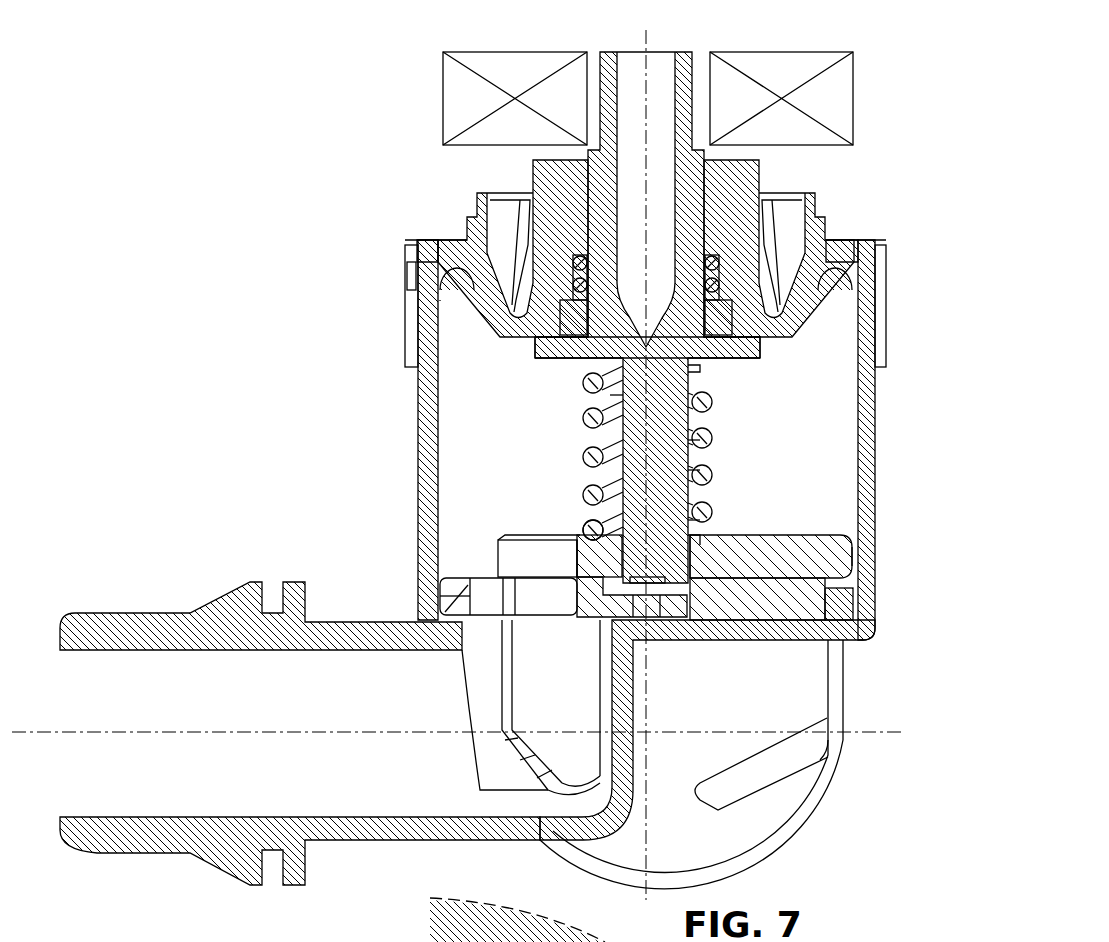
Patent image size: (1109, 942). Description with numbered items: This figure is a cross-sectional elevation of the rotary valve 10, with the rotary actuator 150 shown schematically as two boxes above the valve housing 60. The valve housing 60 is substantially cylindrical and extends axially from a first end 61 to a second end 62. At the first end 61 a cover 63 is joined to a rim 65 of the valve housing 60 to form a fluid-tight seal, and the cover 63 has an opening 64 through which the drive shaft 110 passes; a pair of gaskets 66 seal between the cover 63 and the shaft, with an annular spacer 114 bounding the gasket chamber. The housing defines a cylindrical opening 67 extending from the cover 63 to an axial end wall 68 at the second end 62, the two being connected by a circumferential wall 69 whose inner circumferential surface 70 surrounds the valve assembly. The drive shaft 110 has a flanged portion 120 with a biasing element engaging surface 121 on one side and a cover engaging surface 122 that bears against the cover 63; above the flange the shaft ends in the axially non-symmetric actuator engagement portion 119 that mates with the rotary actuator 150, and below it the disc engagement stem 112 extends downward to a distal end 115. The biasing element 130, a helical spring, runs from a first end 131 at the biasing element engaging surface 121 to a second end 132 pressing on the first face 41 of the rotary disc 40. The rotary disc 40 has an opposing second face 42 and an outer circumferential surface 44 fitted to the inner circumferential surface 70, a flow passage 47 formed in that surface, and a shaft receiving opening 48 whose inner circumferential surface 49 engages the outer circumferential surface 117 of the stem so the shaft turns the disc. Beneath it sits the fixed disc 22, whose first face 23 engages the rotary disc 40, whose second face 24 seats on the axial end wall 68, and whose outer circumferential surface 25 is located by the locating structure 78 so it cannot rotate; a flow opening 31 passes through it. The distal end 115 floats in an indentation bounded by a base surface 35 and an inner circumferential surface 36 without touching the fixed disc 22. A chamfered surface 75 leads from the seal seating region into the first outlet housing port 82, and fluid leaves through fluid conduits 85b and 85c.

The rotary valve 10 is at (474, 475).
The fixed disc 22 is at (474, 578).
The first face 23 is at (800, 540).
The second face 24 is at (785, 622).
The outer circumferential surface 25 is at (440, 592).
The flow opening 31 is at (577, 600).
The base surface 35 is at (610, 555).
The inner circumferential surface 36 is at (690, 625).
The rotary disc 40 is at (500, 538).
The first face 41 is at (795, 540).
The second face 42 is at (738, 612).
The outer circumferential surface 44 is at (858, 560).
The flow passage 47 is at (560, 555).
The shaft receiving opening 48 is at (598, 530).
The inner circumferential surface 49 is at (593, 530).
The valve housing 60 is at (616, 472).
The first end 61 is at (411, 276).
The second end 62 is at (866, 640).
The cover 63 is at (448, 255).
The opening 64 is at (575, 305).
The rim 65 is at (420, 245).
The gaskets 66 is at (745, 240).
The opening 67 is at (834, 371).
The axial end wall 68 is at (702, 625).
The circumferential wall 69 is at (418, 510).
The inner circumferential surface 70 is at (438, 472).
The chamfered surface 75 is at (462, 620).
The locating structure 78 is at (842, 600).
The first outlet housing port 82 is at (608, 625).
The fluid conduit 85b is at (150, 620).
The fluid conduit 85c is at (760, 815).
The drive shaft 110 is at (702, 380).
The disc engagement stem 112 is at (704, 458).
The annular spacer 114 is at (575, 265).
The distal end 115 is at (672, 605).
The outer circumferential surface 117 is at (718, 538).
The actuator engagement portion 119 is at (622, 52).
The flanged portion 120 is at (535, 352).
The biasing element engaging surface 121 is at (548, 357).
The cover engaging surface 122 is at (762, 340).
The biasing element 130 is at (710, 438).
The first end 131 is at (582, 378).
The second end 132 is at (714, 518).
The rotary actuator 150 is at (545, 52).